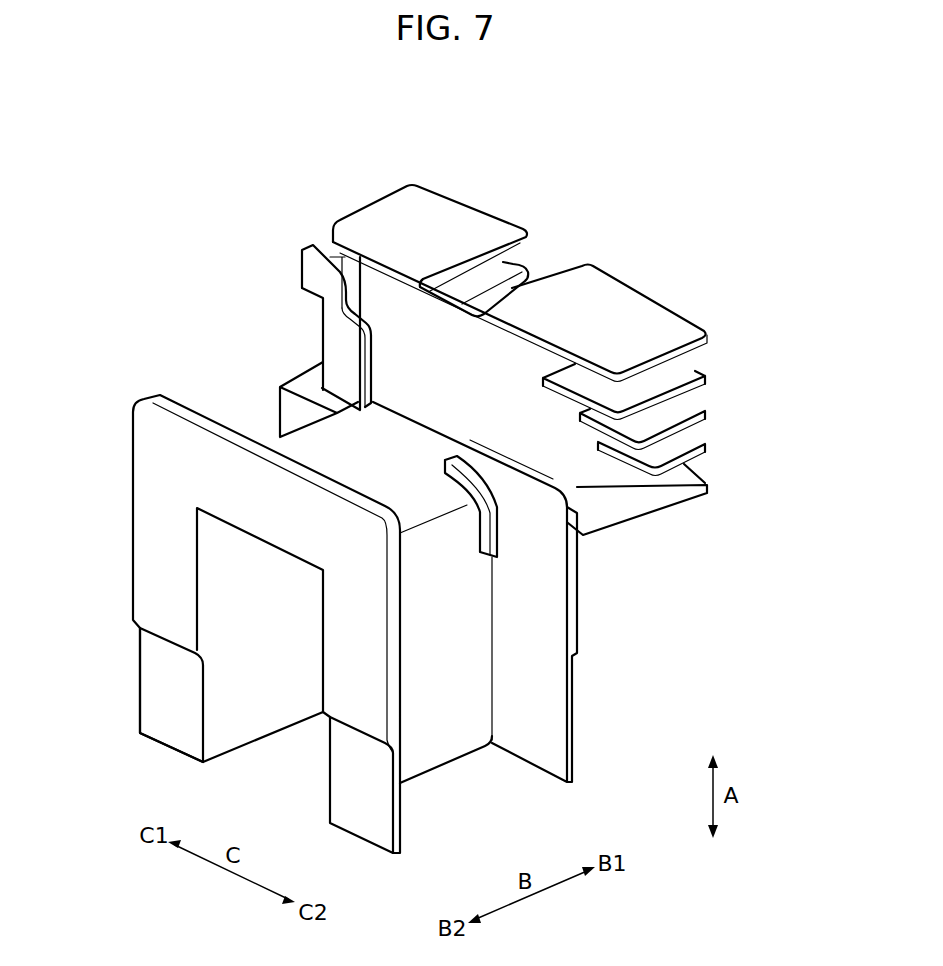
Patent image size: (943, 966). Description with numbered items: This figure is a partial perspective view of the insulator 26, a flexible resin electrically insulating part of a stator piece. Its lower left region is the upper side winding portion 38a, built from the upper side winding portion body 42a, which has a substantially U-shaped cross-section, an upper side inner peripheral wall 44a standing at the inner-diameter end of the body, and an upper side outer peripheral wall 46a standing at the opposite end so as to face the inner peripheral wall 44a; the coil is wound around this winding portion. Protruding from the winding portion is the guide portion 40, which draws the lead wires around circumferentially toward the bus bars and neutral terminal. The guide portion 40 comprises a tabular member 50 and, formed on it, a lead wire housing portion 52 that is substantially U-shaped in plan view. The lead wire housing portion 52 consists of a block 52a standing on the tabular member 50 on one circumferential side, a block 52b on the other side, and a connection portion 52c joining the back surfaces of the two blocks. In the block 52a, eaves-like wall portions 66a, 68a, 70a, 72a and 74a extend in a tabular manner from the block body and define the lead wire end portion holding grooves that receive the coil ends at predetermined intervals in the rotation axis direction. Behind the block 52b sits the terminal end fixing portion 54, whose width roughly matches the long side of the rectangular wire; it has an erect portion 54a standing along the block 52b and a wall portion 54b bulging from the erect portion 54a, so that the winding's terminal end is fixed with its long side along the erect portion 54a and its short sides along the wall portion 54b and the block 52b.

The insulator 26 is at (358, 591).
The upper side winding portion 38a is at (152, 532).
The upper side inner peripheral wall 44a is at (152, 686).
The upper side winding portion body 42a is at (447, 745).
The upper side outer peripheral wall 46a is at (572, 595).
The terminal end fixing portion 54 is at (280, 327).
The erect portion 54a is at (358, 311).
The wall portion 54b is at (313, 271).
The lead wire housing portion 52 is at (520, 255).
The block 52a is at (455, 170).
The block 52b is at (480, 227).
The connection portion 52c is at (500, 263).
The guide portion 40 is at (677, 381).
The wall portion 66a is at (712, 336).
The wall portion 68a is at (710, 378).
The wall portion 70a is at (710, 412).
The wall portion 72a is at (710, 446).
The tabular member 50 is at (690, 507).
The wall portion 74a is at (710, 488).